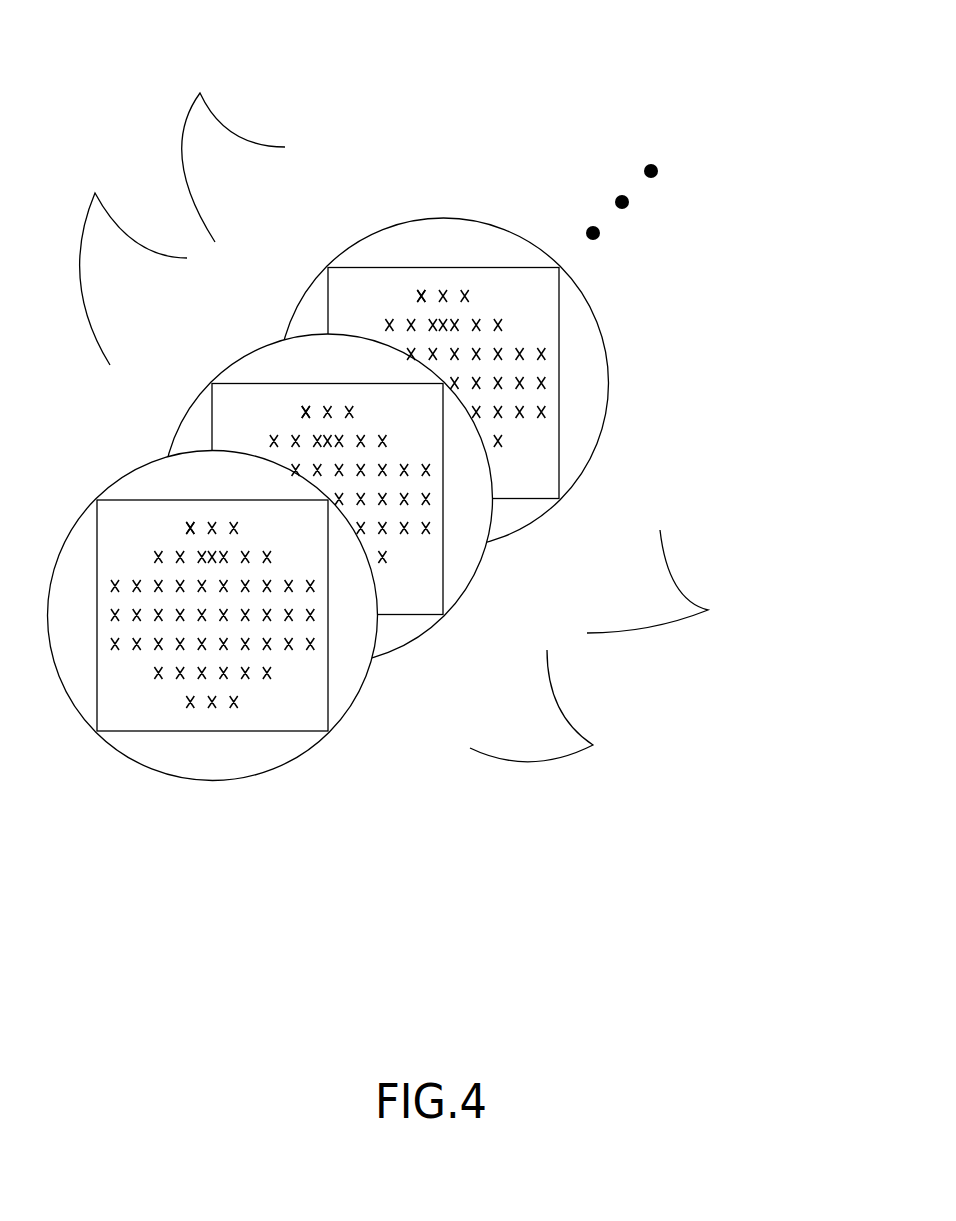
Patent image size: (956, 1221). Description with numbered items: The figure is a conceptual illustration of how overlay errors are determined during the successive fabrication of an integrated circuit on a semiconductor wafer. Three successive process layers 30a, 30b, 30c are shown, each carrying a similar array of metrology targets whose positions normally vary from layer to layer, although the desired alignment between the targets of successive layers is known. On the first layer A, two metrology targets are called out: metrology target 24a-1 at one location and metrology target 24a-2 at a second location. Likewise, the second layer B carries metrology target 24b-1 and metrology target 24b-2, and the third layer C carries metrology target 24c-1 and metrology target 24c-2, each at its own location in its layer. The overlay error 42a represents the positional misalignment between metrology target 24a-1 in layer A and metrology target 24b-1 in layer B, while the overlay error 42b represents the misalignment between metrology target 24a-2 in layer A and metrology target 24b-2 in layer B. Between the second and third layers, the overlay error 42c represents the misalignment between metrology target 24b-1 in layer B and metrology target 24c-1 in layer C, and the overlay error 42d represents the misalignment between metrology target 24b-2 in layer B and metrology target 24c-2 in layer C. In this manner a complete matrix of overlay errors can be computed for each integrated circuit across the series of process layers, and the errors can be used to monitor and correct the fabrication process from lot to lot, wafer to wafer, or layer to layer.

The process layer 30a is at (300, 754).
The process layer 30b is at (420, 636).
The process layer 30c is at (532, 522).
The metrology target 24a-1 is at (188, 527).
The metrology target 24a-2 is at (213, 543).
The metrology target 24b-1 is at (300, 410).
The metrology target 24b-2 is at (328, 427).
The metrology target 24c-1 is at (413, 293).
The metrology target 24c-2 is at (443, 311).
The overlay error 42a is at (120, 238).
The overlay error 42b is at (585, 718).
The overlay error 42c is at (219, 125).
The overlay error 42d is at (698, 604).